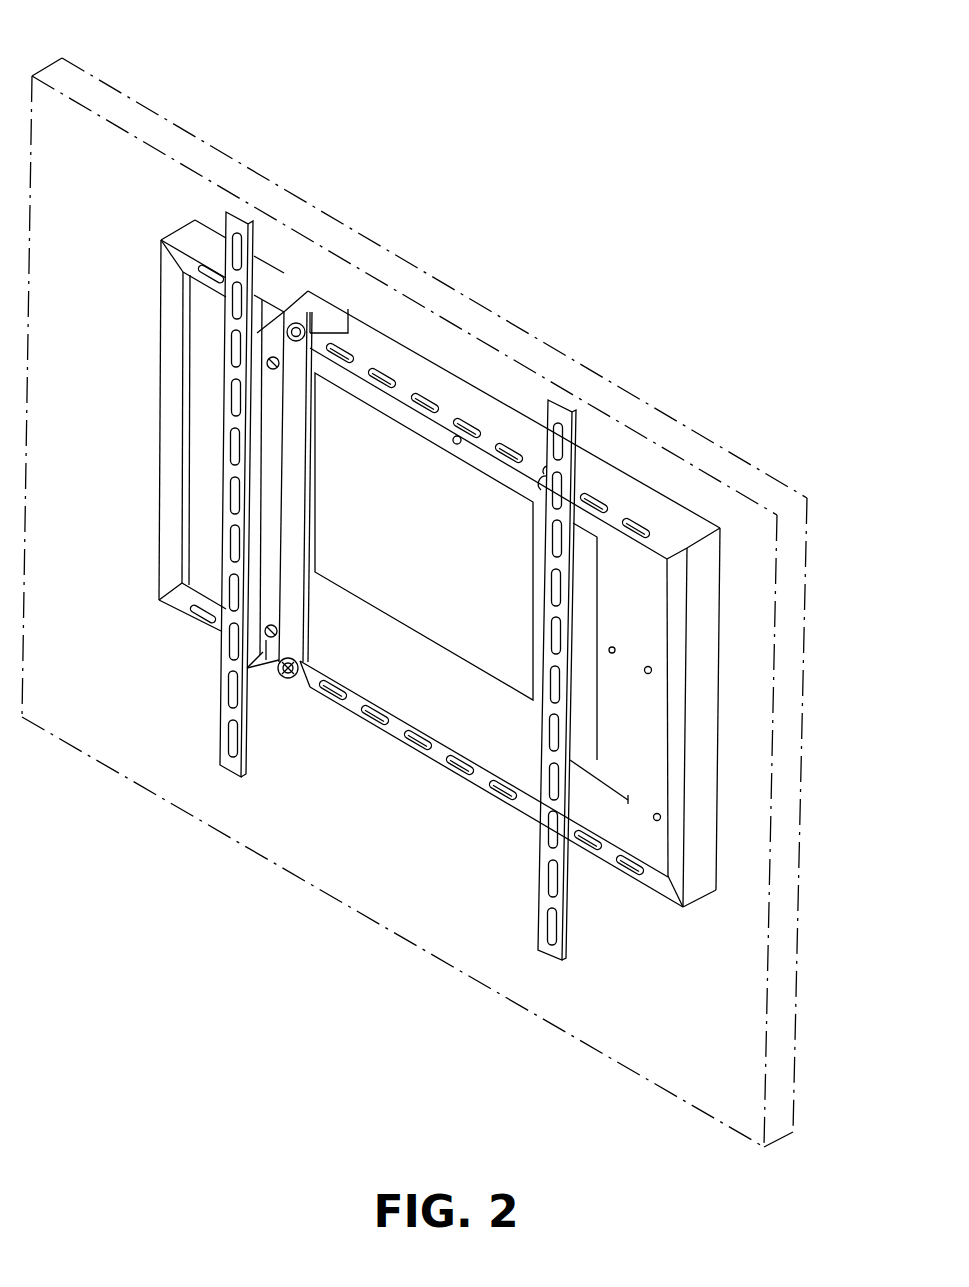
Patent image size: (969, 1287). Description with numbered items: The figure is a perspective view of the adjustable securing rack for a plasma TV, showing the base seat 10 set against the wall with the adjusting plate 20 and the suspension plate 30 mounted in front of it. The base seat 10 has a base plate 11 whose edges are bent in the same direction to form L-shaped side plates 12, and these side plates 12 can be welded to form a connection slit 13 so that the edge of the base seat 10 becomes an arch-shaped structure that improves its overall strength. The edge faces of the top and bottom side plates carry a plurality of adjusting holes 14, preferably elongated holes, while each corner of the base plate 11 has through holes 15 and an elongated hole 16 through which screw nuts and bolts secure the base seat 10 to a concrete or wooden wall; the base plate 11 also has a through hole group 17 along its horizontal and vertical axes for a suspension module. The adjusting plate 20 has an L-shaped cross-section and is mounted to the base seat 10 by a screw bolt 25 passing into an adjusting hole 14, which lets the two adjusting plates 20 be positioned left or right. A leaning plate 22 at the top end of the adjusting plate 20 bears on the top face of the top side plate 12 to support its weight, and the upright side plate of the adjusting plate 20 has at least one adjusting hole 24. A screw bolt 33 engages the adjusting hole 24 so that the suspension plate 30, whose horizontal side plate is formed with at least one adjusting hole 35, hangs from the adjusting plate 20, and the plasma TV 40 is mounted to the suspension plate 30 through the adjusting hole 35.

The base seat 10 is at (372, 818).
The base plate 11 is at (410, 692).
The L-shaped side plates 12 is at (442, 752).
The connection slit 13 is at (668, 900).
The adjusting holes 14 is at (337, 698).
The through holes 15 is at (660, 818).
The elongated hole 16 is at (617, 798).
The through hole group 17 is at (654, 671).
The adjusting plate 20 is at (283, 513).
The leaning plate 22 is at (318, 298).
The adjusting hole 24 is at (266, 365).
The screw bolt 25 is at (322, 329).
The suspension plate 30 is at (228, 428).
The screw bolt 33 is at (264, 310).
The adjusting hole 35 is at (236, 350).
The plasma TV 40 is at (132, 98).